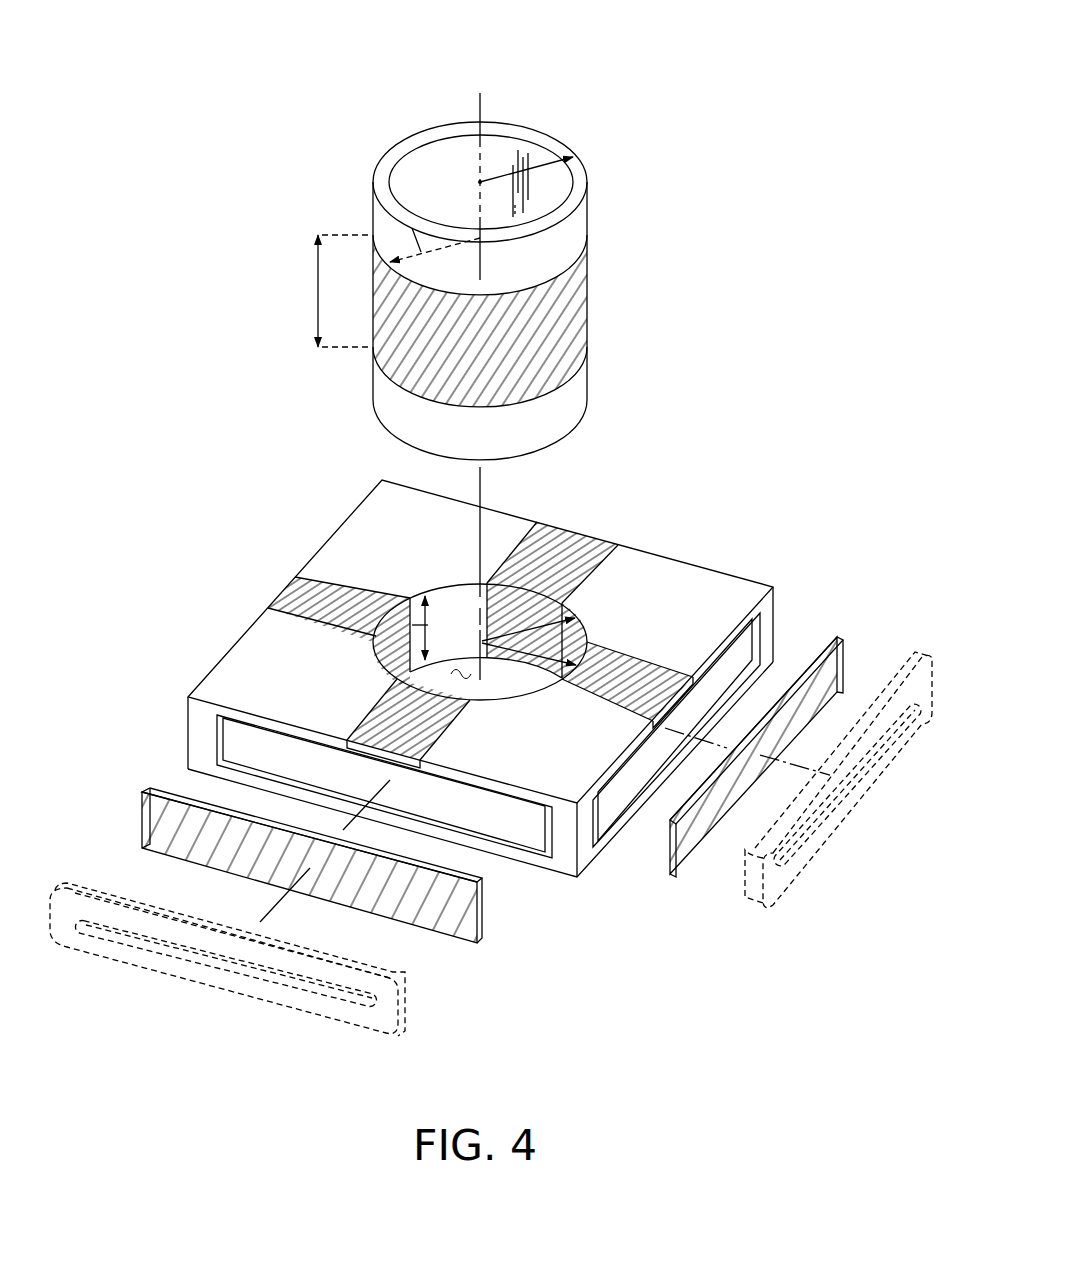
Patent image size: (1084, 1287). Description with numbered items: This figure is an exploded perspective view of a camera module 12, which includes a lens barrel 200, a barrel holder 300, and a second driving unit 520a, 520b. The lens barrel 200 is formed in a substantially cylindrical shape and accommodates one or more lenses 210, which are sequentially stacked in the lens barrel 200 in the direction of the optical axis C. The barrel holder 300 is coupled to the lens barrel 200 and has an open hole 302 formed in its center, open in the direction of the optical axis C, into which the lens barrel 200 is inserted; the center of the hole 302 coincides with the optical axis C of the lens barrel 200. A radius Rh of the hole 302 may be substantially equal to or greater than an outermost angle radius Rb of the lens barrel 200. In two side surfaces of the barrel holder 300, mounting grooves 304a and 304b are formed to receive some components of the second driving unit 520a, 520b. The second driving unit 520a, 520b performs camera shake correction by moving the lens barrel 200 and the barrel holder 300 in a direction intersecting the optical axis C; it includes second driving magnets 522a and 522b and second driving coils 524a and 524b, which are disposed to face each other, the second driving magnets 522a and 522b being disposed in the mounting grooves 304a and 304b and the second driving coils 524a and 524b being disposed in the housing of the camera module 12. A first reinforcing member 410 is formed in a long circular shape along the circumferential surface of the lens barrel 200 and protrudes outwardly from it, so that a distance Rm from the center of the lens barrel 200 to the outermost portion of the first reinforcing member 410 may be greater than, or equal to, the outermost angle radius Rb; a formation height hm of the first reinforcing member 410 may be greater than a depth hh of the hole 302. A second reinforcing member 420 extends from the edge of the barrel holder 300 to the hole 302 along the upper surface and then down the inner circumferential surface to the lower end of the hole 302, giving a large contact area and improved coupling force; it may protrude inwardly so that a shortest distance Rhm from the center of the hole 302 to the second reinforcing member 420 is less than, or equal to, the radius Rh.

The camera module 12 is at (695, 95).
The lens barrel 200 is at (383, 168).
The lenses 210 is at (443, 160).
The barrel holder 300 is at (710, 588).
The hole 302 is at (457, 668).
The mounting groove 304a is at (540, 828).
The mounting groove 304b is at (603, 805).
The first reinforcing member 410 is at (577, 312).
The second reinforcing member 420 is at (310, 590).
The second driving unit 520a is at (600, 1033).
The second driving magnet 522a is at (483, 917).
The second driving coil 524a is at (383, 1010).
The second driving unit 520b is at (948, 568).
The second driving magnet 522b is at (835, 637).
The second driving coil 524b is at (907, 653).
The optical axis C is at (480, 369).
The outermost angle radius Rb is at (543, 160).
The distance Rm is at (413, 223).
The formation height hm is at (323, 291).
The depth hh is at (380, 623).
The radius Rh is at (527, 632).
The shortest distance Rhm is at (547, 660).